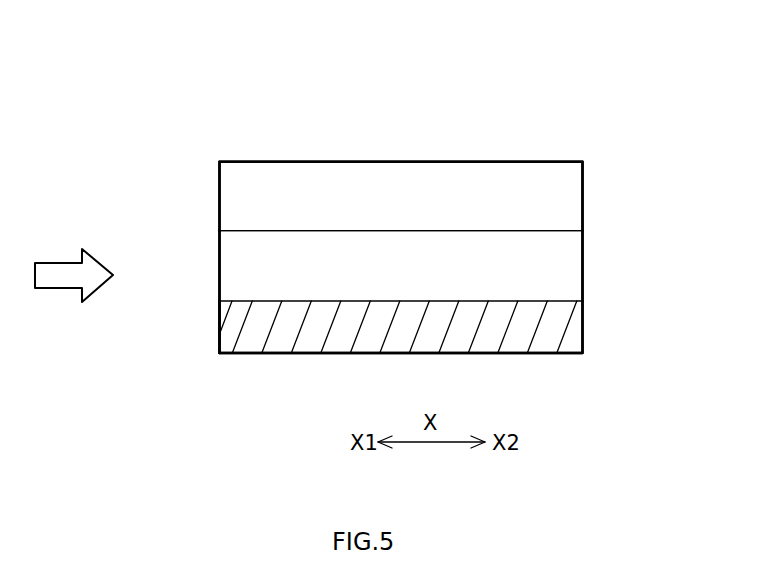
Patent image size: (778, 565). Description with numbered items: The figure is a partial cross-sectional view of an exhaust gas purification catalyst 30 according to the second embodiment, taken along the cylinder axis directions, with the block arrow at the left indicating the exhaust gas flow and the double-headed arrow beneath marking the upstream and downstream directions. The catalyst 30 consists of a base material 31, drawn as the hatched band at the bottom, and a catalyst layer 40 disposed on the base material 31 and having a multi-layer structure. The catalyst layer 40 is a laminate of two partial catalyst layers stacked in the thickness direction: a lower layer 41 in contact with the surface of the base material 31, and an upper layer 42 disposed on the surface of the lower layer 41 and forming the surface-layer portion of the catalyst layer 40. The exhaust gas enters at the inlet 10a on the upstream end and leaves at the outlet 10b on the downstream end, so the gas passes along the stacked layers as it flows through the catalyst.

The exhaust gas purification catalyst 30 is at (612, 88).
The catalyst layer 40 is at (287, 160).
The partial catalyst layer (upper layer) 42 is at (563, 194).
The partial catalyst layer (lower layer) 41 is at (563, 256).
The outlet 10b is at (585, 311).
The base material 31 is at (565, 333).
The inlet 10a is at (218, 316).